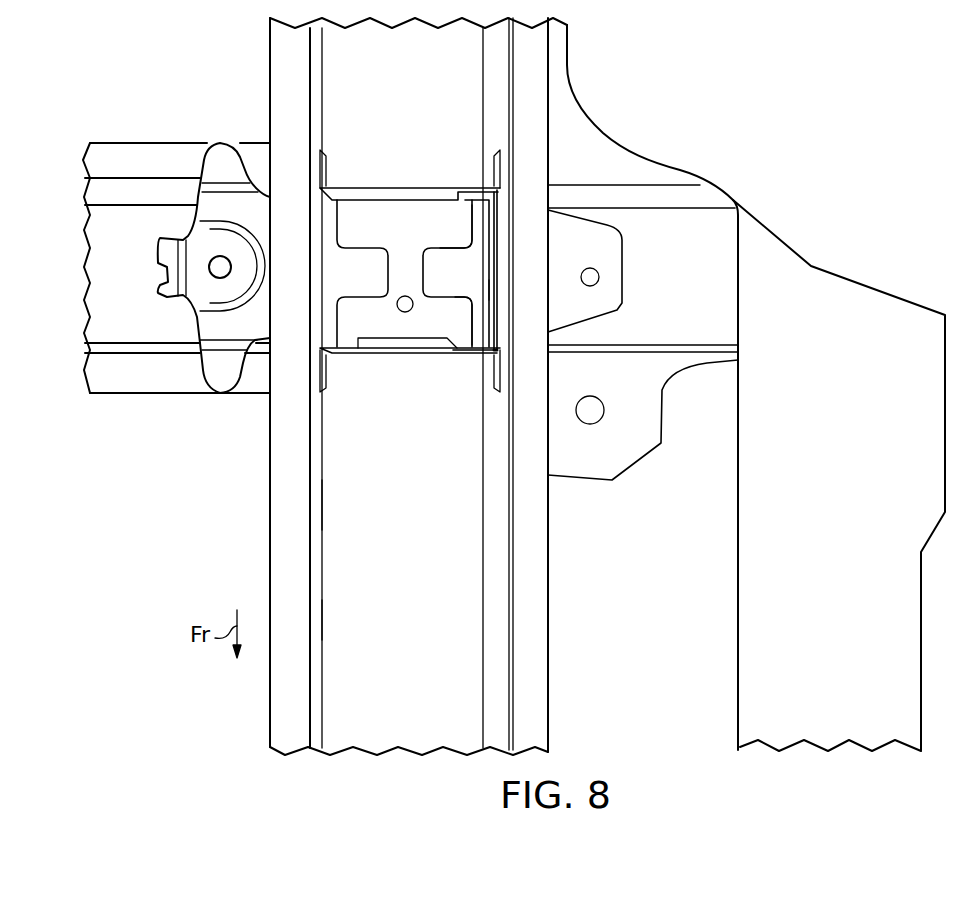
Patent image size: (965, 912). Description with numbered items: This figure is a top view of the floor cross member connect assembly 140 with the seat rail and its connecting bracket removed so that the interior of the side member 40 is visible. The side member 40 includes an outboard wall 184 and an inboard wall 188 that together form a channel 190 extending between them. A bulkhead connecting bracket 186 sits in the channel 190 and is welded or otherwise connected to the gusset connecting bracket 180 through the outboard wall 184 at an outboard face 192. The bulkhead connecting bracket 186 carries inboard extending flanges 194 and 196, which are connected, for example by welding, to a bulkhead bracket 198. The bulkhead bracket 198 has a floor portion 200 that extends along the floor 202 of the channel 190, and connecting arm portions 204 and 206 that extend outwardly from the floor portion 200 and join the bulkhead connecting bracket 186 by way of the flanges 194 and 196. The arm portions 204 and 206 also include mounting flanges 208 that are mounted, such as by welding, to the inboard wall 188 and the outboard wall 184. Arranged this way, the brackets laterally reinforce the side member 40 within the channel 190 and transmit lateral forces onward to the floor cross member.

The side member 40 is at (333, 695).
The floor cross member connect assembly 140 is at (601, 177).
The gusset connecting bracket 180 is at (623, 297).
The outboard wall 184 is at (497, 659).
The bulkhead connecting bracket 186 is at (493, 292).
The inboard wall 188 is at (316, 573).
The channel 190 is at (333, 622).
The outboard face 192 is at (498, 268).
The inboard extending flange 194 is at (460, 198).
The inboard extending flange 196 is at (465, 343).
The bulkhead bracket 198 is at (392, 240).
The floor portion 200 is at (421, 332).
The floor 202 is at (333, 505).
The connecting arm portion 204 is at (414, 188).
The connecting arm portion 206 is at (370, 348).
The mounting flange 208 is at (322, 160).